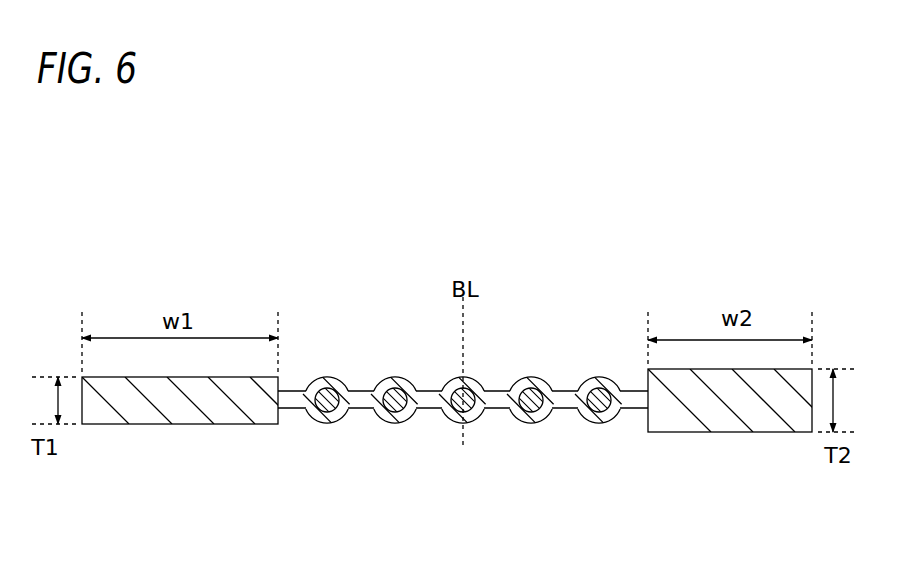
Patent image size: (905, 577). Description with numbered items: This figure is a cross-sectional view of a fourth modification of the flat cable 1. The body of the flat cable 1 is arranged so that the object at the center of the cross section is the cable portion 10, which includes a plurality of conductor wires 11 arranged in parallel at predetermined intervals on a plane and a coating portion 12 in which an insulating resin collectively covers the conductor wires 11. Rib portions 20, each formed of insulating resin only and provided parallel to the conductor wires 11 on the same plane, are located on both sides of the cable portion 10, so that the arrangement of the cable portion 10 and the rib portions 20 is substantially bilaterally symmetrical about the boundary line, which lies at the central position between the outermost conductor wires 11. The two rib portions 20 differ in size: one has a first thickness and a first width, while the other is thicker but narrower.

The flat cable 1 is at (604, 226).
The cable portion 10 is at (277, 442).
The conductor wires 11 is at (393, 378).
The coating portion 12 is at (438, 382).
The rib portions 20 is at (170, 405).